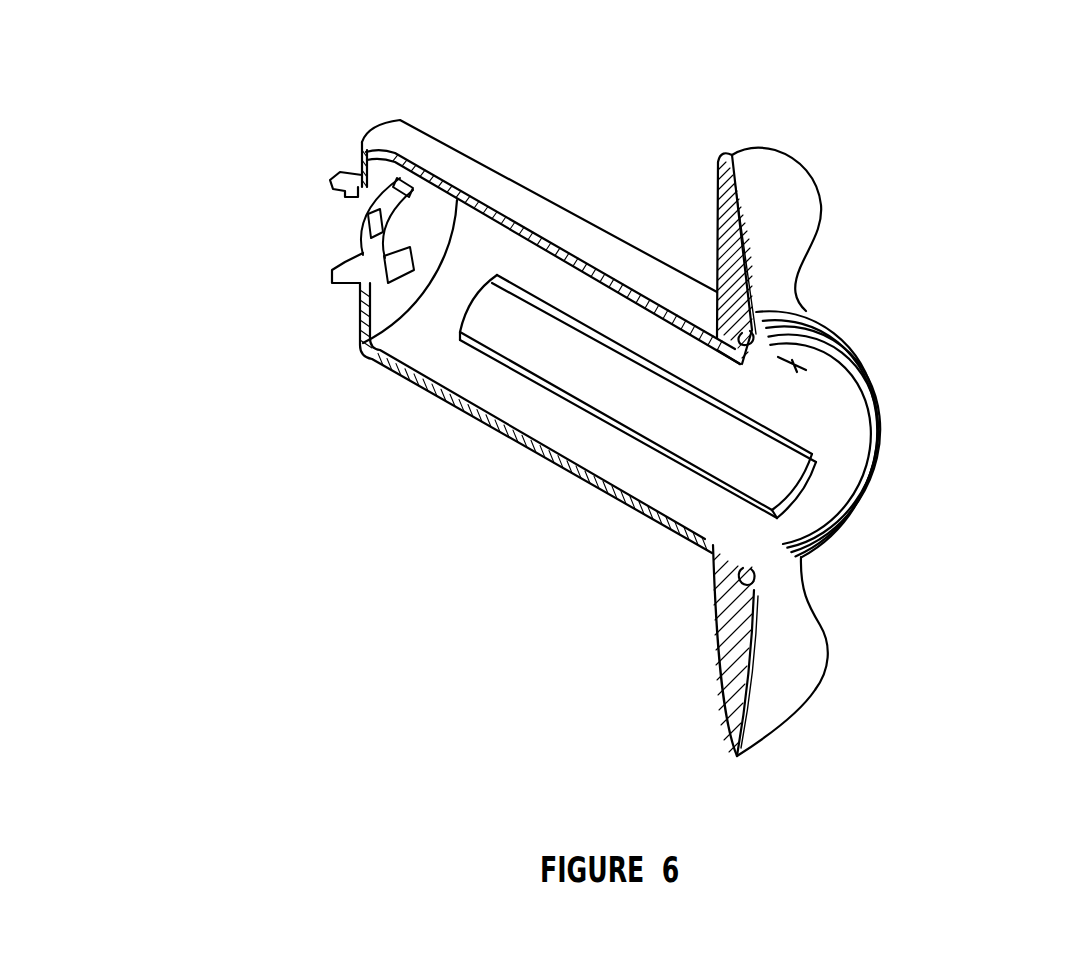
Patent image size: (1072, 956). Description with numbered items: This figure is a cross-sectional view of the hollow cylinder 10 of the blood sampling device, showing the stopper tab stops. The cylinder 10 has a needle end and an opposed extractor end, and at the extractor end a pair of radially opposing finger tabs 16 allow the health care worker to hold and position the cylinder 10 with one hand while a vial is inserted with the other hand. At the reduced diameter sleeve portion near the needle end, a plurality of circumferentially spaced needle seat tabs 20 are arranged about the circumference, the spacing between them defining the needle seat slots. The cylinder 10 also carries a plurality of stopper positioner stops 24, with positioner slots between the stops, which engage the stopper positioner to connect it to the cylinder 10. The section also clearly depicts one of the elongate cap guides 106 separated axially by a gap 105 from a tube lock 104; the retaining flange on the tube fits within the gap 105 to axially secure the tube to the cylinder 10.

The cylinder 10 is at (527, 184).
The finger tabs 16 is at (809, 165).
The needle seat tabs 20 is at (360, 221).
The stopper positioner stops 24 is at (385, 279).
The tube lock 104 is at (806, 519).
The gap 105 is at (824, 450).
The elongate guides 106 is at (504, 618).